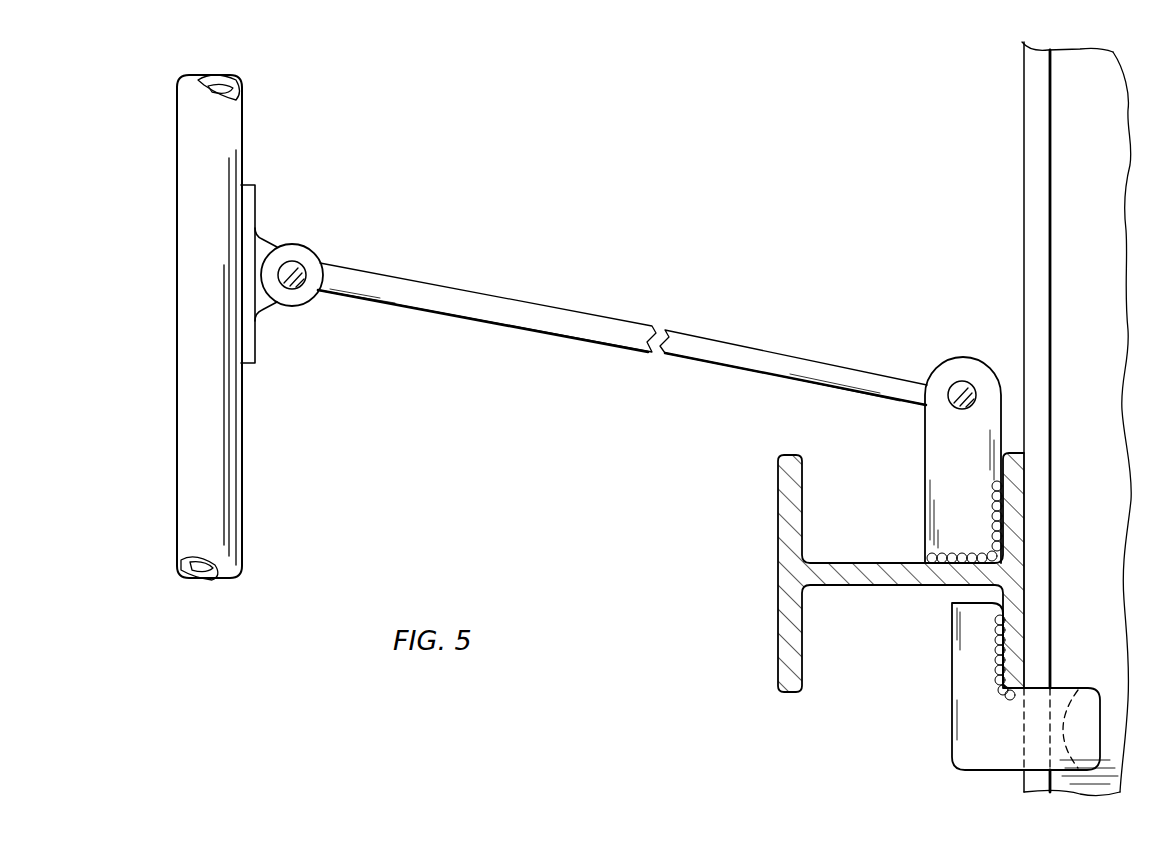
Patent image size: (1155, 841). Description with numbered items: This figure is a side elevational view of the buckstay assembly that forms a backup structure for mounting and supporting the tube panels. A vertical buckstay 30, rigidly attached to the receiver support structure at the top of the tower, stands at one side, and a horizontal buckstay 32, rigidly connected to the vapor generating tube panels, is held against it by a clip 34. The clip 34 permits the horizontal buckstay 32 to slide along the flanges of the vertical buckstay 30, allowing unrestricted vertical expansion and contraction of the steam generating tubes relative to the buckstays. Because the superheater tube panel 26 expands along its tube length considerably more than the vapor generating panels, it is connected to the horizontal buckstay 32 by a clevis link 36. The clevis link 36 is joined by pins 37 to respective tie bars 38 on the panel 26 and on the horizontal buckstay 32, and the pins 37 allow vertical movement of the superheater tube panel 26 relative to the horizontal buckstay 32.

The superheater tube panel 26 is at (266, 469).
The vertical buckstay 30 is at (1022, 284).
The horizontal buckstay 32 is at (860, 572).
The clip 34 is at (965, 660).
The clevis link 36 is at (588, 318).
The pin 37 is at (294, 266).
The tie bar 38 is at (252, 198).